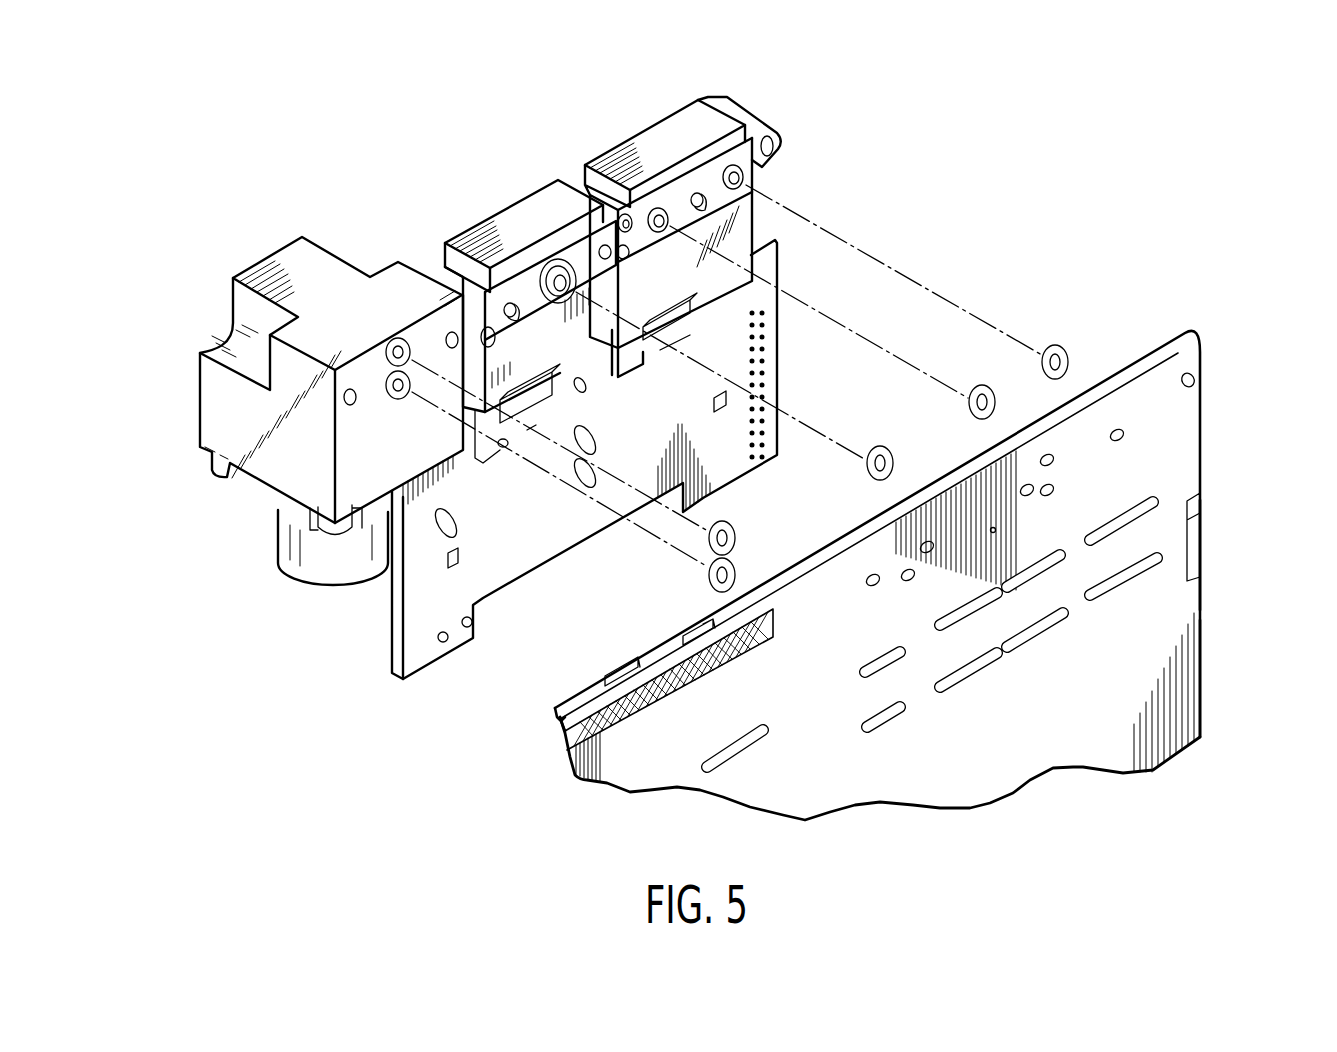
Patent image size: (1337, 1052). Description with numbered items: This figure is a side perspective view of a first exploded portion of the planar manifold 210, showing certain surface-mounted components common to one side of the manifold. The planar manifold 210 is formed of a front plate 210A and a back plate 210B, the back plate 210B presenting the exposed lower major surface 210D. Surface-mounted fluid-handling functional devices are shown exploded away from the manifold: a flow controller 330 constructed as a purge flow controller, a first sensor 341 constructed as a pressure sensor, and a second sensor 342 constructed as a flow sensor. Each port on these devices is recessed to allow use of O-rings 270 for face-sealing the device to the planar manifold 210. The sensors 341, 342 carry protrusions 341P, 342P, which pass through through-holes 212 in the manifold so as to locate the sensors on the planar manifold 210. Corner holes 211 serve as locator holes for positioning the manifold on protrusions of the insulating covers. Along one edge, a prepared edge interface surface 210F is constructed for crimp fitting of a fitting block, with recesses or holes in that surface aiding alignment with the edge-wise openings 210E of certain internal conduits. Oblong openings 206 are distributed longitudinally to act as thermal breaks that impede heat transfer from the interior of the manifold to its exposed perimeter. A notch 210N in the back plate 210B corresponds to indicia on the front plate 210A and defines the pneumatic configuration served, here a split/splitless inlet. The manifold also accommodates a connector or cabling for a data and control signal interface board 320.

The flow controller 330 is at (300, 254).
The data and control signal interface board 320 is at (408, 613).
The first sensor 341 is at (537, 207).
The protrusion 341P is at (594, 338).
The second sensor 342 is at (683, 120).
The protrusion 342P is at (693, 198).
The O-rings 270 is at (1062, 350).
The planar manifold 210 is at (1197, 343).
The corner holes 211 is at (1200, 382).
The through-holes 212 is at (1114, 443).
The notch 210N is at (1200, 513).
The front plate 210A is at (1200, 548).
The oblong openings 206 is at (1107, 595).
The back plate 210B is at (1200, 688).
The edge interface surface 210F is at (730, 655).
The edge-wise openings 210E is at (700, 640).
The lower major surface 210D is at (843, 795).